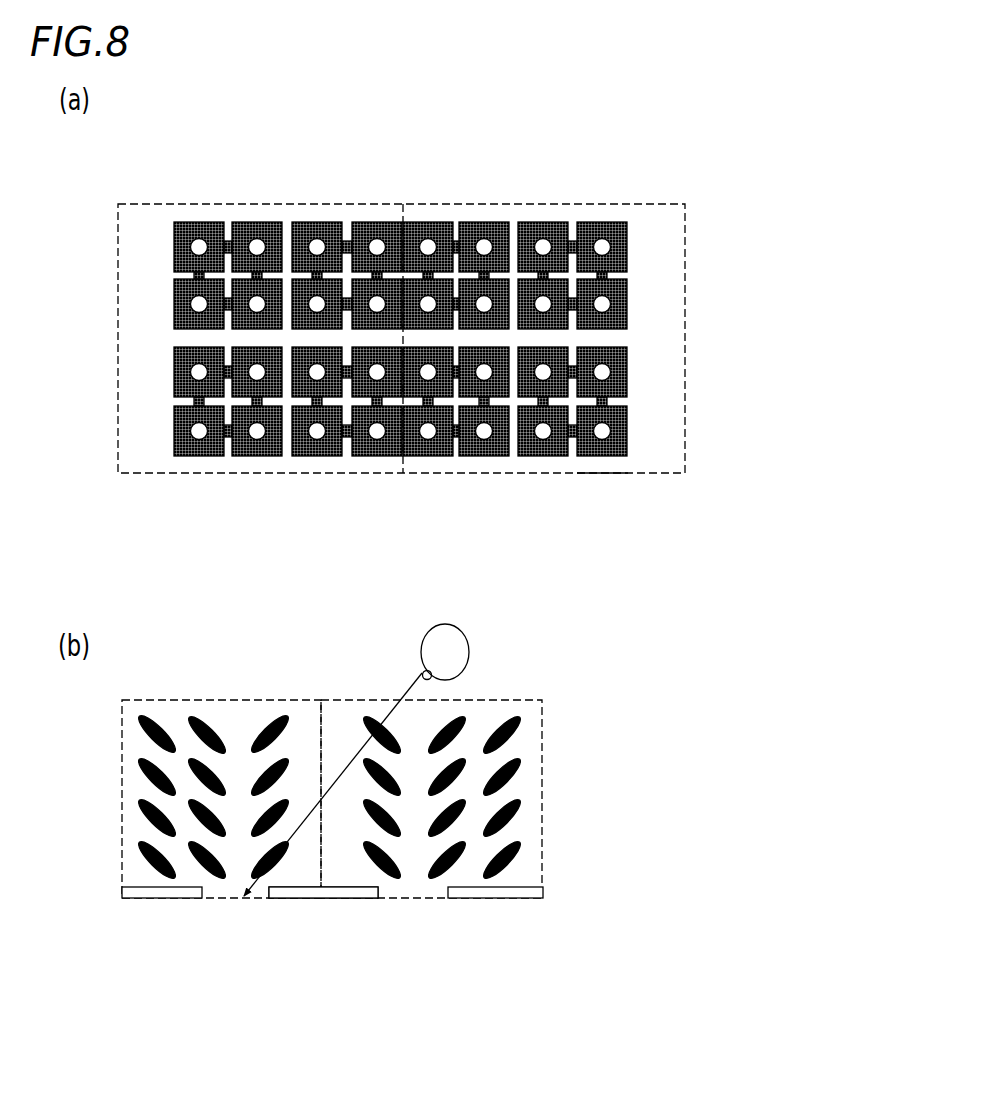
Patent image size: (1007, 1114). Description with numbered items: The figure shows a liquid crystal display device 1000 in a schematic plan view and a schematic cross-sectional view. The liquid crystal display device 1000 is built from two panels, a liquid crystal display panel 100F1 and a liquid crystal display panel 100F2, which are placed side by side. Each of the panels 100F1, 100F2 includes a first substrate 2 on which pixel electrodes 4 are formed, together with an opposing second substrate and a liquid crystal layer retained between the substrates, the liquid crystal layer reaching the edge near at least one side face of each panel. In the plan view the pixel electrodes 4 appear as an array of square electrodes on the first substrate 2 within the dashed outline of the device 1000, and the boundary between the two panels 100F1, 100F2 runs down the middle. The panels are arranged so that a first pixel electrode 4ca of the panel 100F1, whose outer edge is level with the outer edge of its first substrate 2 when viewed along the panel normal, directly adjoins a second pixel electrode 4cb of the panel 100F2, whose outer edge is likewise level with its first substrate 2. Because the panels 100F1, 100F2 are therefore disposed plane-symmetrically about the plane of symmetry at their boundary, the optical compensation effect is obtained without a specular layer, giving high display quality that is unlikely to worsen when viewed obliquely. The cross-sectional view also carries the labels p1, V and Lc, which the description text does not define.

The liquid crystal display device 1000 is at (812, 182).
The first substrate 2 is at (683, 409).
The liquid crystal display panel 100F1 is at (721, 212).
The liquid crystal display panel 100F2 is at (198, 201).
The pixel electrode 4 is at (336, 547).
The first pixel electrode 4ca is at (409, 558).
The second pixel electrode 4cb is at (262, 547).
The pitch p1 is at (587, 468).
The viewpoint V is at (458, 650).
The liquid crystal molecule Lc is at (520, 720).